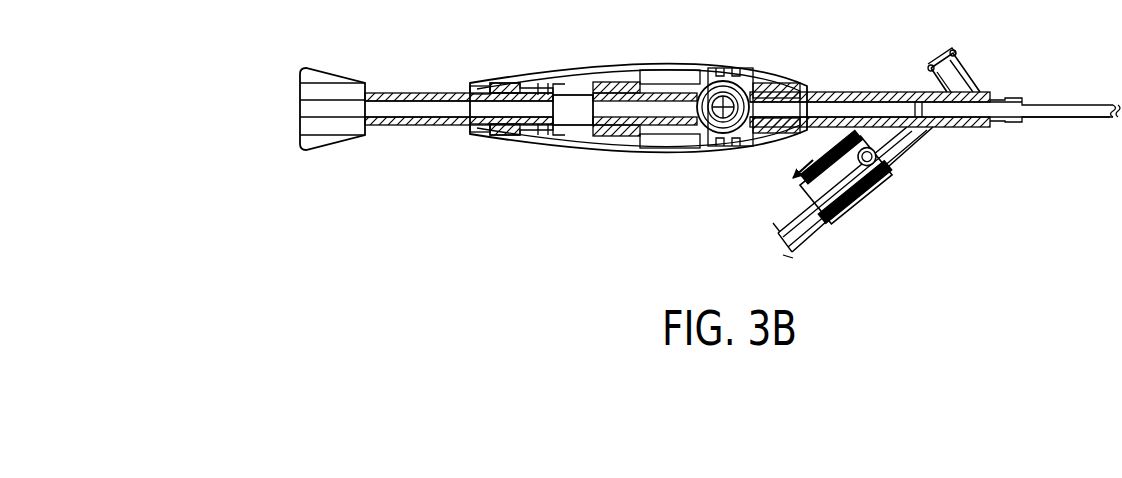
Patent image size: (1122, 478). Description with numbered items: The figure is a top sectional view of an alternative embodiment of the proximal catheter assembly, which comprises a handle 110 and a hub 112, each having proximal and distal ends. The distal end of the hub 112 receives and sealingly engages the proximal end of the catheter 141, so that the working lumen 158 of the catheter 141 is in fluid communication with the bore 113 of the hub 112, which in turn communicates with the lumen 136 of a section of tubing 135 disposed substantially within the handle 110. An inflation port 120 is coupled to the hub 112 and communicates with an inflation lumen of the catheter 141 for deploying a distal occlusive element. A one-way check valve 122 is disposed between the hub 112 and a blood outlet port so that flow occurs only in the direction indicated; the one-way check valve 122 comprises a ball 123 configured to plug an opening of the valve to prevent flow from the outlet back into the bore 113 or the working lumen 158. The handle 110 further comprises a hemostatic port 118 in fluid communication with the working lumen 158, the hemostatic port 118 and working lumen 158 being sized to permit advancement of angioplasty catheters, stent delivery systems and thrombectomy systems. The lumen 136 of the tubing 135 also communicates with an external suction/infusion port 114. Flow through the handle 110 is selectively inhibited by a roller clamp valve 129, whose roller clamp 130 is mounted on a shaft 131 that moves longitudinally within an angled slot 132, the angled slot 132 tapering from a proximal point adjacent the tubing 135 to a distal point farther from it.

The handle 110 is at (722, 164).
The hub 112 is at (887, 91).
The bore 113 is at (847, 107).
The external suction/infusion port 114 is at (707, 81).
The hemostatic port 118 is at (331, 151).
The inflation port 120 is at (950, 52).
The one-way check valve 122 is at (845, 212).
The ball 123 is at (872, 197).
The roller clamp valve 129 is at (559, 131).
The roller clamp 130 is at (556, 87).
The shaft 131 is at (575, 136).
The angled slot 132 is at (652, 76).
The tubing 135 is at (612, 87).
The lumen 136 is at (610, 128).
The catheter 141 is at (1050, 120).
The working lumen 158 is at (1085, 107).